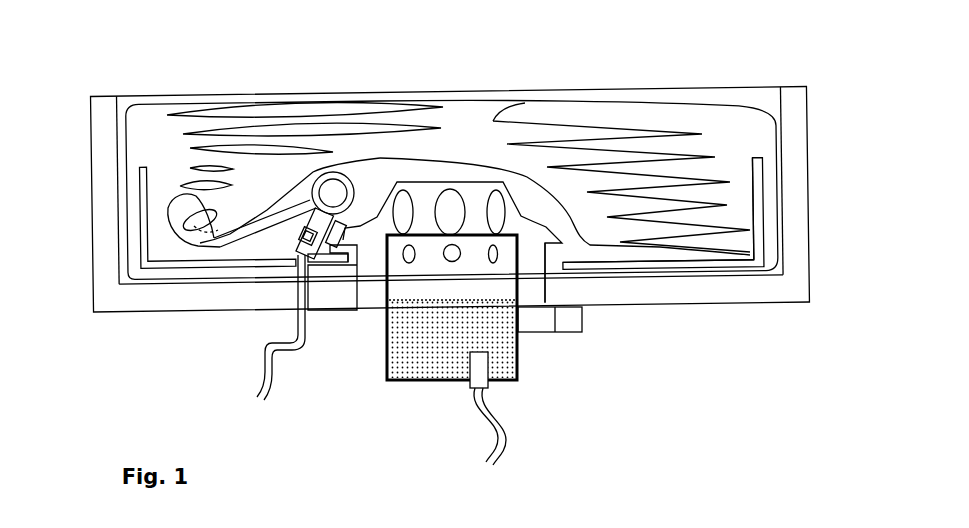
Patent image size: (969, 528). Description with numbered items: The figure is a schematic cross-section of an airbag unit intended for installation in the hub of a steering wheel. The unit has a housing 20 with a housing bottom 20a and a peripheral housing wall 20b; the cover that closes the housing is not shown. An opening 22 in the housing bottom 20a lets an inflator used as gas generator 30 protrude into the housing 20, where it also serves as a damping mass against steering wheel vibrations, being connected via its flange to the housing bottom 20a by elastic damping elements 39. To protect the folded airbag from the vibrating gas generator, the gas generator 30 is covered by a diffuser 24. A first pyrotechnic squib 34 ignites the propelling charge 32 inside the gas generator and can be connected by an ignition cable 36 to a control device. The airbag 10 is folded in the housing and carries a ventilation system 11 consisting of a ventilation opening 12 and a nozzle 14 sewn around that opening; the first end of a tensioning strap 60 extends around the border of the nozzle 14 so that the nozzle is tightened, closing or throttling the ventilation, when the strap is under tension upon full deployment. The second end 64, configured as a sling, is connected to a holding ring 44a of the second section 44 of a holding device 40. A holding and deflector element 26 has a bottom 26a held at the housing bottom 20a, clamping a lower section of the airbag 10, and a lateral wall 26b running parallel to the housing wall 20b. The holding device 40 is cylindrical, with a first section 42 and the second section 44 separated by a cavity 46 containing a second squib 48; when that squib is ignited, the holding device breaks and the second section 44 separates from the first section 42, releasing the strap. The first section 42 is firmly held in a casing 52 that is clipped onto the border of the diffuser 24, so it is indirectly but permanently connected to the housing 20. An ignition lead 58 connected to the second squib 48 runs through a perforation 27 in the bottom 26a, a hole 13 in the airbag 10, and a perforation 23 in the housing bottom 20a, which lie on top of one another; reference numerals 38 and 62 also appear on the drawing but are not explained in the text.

The airbag 10 is at (573, 90).
The ventilation system 11 is at (212, 198).
The ventilation opening 12 is at (205, 207).
The hole 13 is at (294, 282).
The nozzle 14 is at (186, 206).
The housing 20 is at (102, 300).
The housing bottom 20a is at (153, 300).
The housing wall 20b is at (103, 150).
The opening 22 is at (560, 305).
The perforation 23 is at (293, 291).
The diffuser 24 is at (488, 181).
The holding and deflector element 26 is at (758, 268).
The bottom of holding and deflector element 26a is at (643, 266).
The lateral wall 26b is at (757, 170).
The perforation 27 is at (296, 270).
The gas generator 30 is at (422, 285).
The propelling charge 32 is at (433, 350).
The first pyrotechnic squib 34 is at (482, 368).
The ignition cable 36 is at (495, 430).
The tray 38 is at (565, 335).
The elastic damping elements 39 is at (580, 340).
The holding device 40 is at (318, 228).
The first section 42 is at (295, 257).
The second section 44 is at (325, 208).
The holding ring 44a is at (331, 180).
The cavity 46 is at (322, 300).
The second squib 48 is at (305, 230).
The casing 52 is at (235, 252).
The ignition lead 58 is at (289, 346).
The tensioning strap 60 is at (175, 236).
The upper arm 62 is at (183, 222).
The second end 64 is at (331, 238).